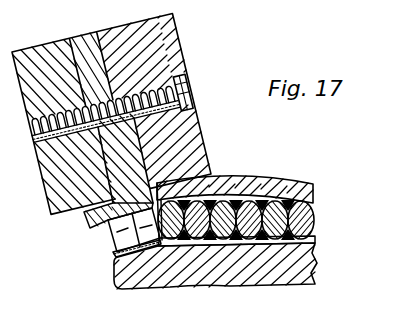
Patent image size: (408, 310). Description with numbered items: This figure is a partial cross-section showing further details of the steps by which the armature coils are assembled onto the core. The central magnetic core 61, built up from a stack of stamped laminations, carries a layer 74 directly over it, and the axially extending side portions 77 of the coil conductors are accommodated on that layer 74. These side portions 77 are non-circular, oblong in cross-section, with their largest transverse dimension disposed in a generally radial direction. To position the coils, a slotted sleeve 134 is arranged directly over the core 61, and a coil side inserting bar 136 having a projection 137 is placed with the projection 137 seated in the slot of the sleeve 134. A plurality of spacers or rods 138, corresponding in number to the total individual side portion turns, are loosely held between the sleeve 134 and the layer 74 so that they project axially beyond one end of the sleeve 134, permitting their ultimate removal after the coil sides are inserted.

The coil side inserting bar 136 is at (190, 138).
The projection 137 is at (88, 221).
The spacers or rods 138 is at (117, 253).
The slotted sleeve 134 is at (236, 184).
The side portions of the conductors 77 is at (303, 221).
The layer 74 is at (317, 236).
The central magnetic core 61 is at (297, 260).